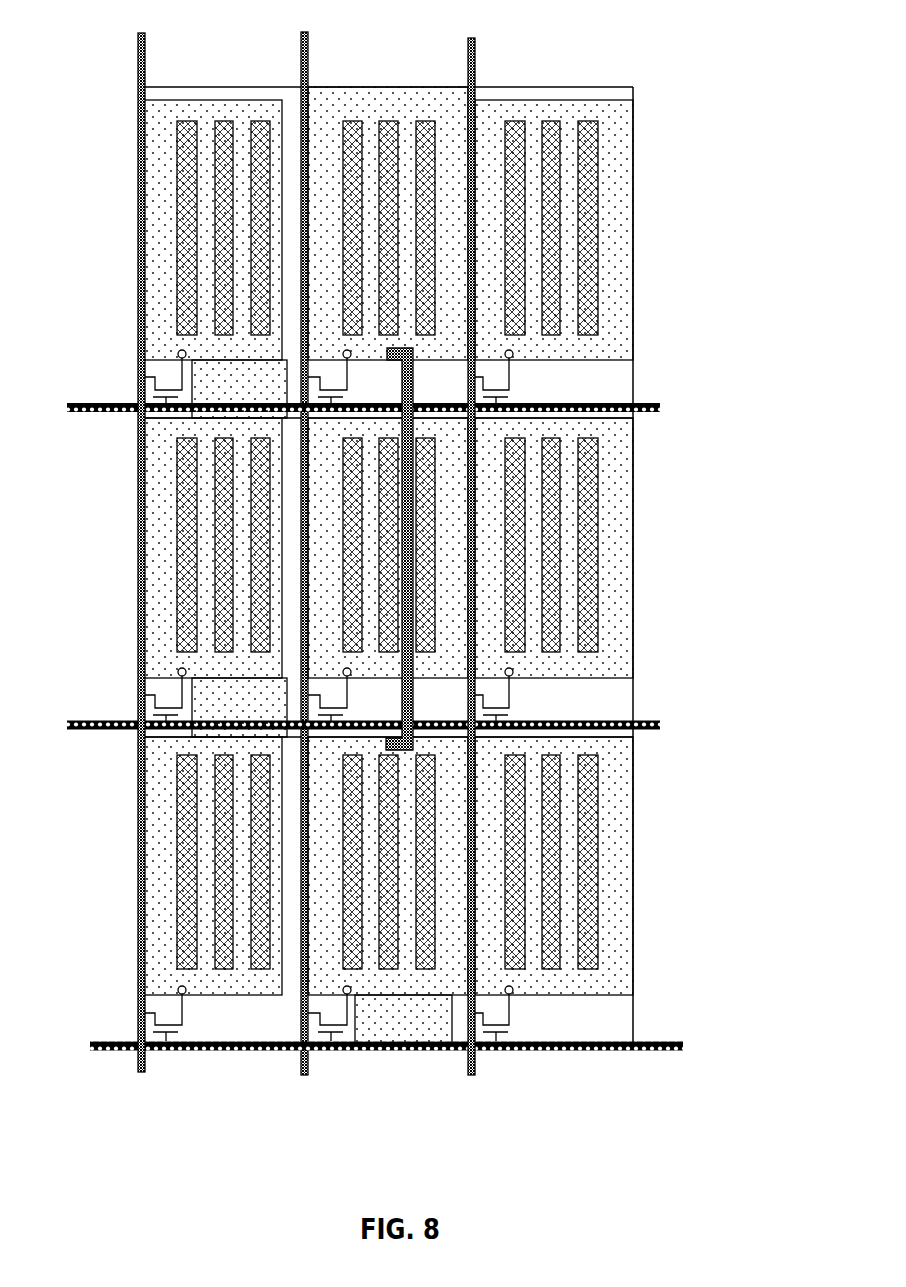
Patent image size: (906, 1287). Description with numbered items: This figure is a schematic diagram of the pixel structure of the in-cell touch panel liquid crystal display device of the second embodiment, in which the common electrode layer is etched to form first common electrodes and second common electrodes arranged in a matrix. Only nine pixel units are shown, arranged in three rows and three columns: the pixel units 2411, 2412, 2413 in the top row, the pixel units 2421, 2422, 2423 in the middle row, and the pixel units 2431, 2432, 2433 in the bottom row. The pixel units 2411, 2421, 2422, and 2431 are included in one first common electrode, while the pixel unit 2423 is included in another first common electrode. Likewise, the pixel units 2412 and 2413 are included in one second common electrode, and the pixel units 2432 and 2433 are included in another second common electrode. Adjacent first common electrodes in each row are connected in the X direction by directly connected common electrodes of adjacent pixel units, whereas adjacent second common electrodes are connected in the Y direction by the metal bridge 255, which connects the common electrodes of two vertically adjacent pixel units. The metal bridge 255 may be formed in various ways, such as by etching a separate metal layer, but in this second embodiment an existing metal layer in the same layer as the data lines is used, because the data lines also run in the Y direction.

The pixel unit 2411 is at (218, 88).
The pixel unit 2412 is at (412, 88).
The pixel unit 2413 is at (548, 88).
The pixel unit 2421 is at (138, 493).
The pixel unit 2422 is at (461, 435).
The pixel unit 2423 is at (635, 548).
The pixel unit 2431 is at (222, 997).
The pixel unit 2432 is at (398, 997).
The pixel unit 2433 is at (557, 997).
The metal bridge 255 is at (404, 664).